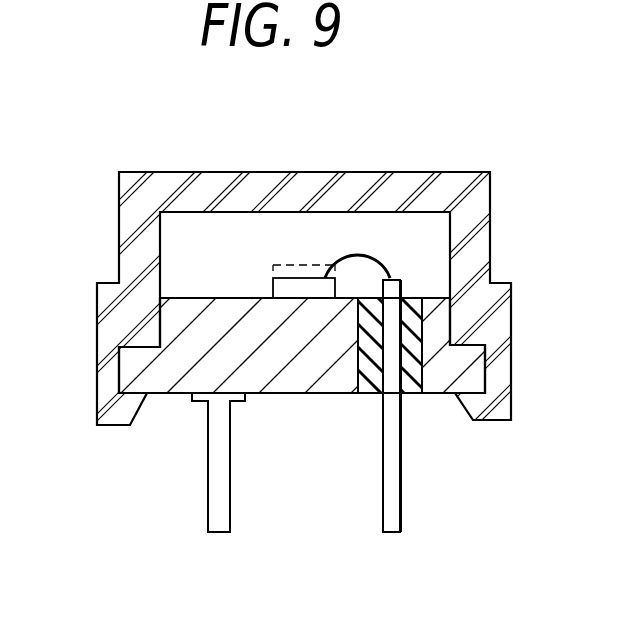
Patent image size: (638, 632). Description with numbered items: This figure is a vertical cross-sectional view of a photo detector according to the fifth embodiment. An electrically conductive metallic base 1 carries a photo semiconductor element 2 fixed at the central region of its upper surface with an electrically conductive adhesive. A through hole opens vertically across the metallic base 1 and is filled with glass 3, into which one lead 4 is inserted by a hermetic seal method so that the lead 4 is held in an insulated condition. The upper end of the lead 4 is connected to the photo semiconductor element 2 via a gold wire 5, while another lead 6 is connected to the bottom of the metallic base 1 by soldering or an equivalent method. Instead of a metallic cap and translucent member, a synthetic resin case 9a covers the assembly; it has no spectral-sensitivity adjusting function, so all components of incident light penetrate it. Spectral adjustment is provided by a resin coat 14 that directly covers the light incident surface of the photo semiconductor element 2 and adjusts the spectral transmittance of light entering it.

The metallic base 1 is at (127, 369).
The photo semiconductor element 2 is at (273, 287).
The glass 3 is at (417, 380).
The lead 4 is at (394, 498).
The gold wire 5 is at (377, 257).
The lead 6 is at (218, 507).
The synthetic resin case 9a is at (304, 186).
The resin coat 14 is at (282, 263).